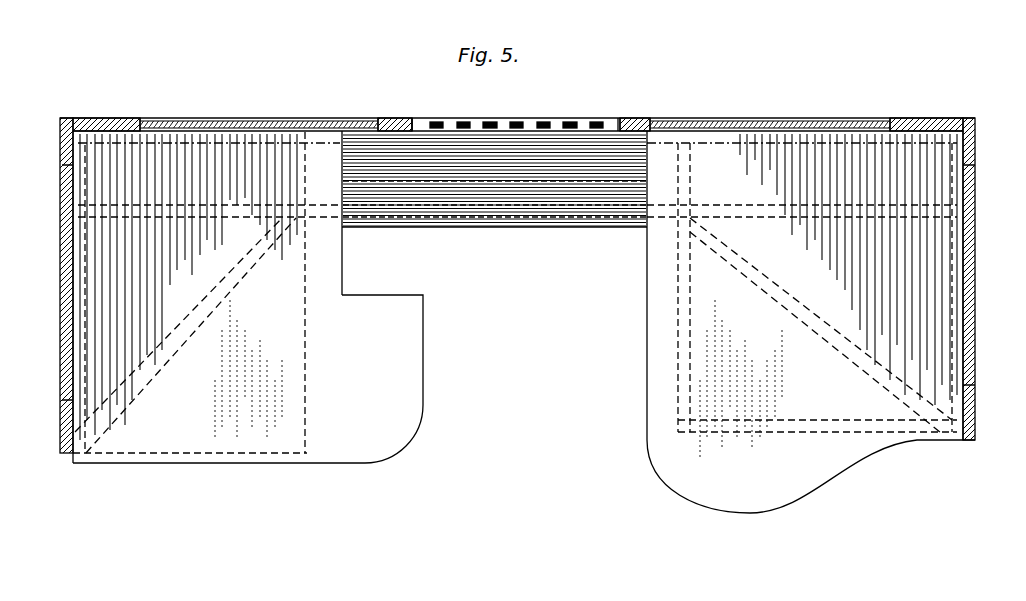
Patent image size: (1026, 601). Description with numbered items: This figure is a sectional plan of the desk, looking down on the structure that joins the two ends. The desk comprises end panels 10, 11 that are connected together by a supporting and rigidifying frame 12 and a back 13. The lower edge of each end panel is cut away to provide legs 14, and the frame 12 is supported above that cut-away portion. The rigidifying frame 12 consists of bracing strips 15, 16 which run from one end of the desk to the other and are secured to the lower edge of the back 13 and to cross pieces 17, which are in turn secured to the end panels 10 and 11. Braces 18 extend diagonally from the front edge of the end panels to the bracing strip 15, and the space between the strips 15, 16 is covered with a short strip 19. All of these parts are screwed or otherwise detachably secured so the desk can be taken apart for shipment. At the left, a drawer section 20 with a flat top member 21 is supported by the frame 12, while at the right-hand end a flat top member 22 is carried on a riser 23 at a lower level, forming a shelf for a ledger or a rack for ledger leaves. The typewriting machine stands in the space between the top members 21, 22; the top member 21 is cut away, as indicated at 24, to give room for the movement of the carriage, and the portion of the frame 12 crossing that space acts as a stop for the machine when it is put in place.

The end panel 10 is at (68, 290).
The end panel 11 is at (970, 323).
The supporting and rigidifying frame 12 is at (521, 216).
The back 13 is at (729, 121).
The legs 14 is at (541, 120).
The bracing strip 15 is at (598, 208).
The bracing strip 16 is at (530, 134).
The cross pieces 17 is at (88, 281).
The braces 18 is at (184, 327).
The short strip 19 is at (495, 188).
The drawer section 20 is at (290, 456).
The flat top member 21 is at (232, 430).
The flat top member 22 is at (845, 448).
The riser 23 is at (773, 426).
The cut-away portion 24 is at (374, 275).